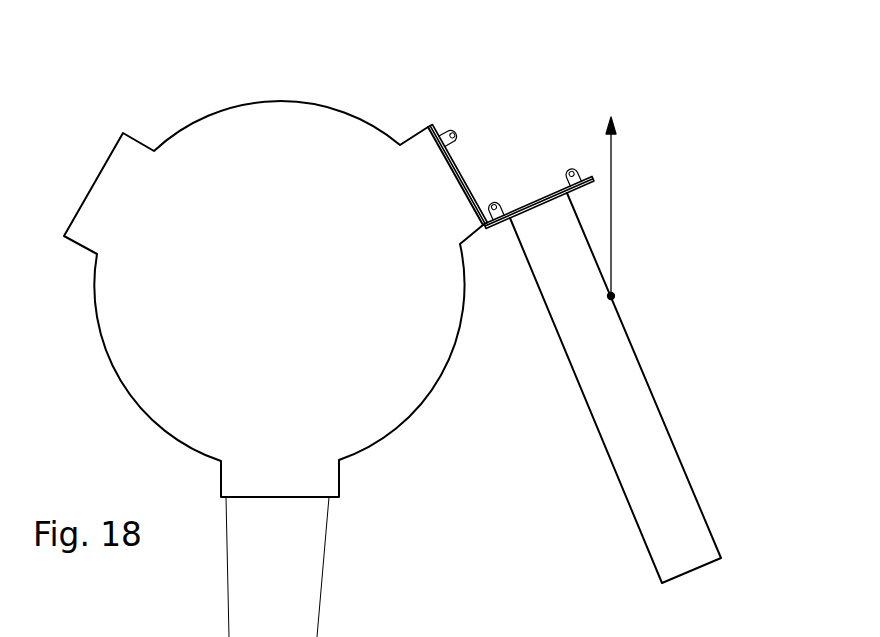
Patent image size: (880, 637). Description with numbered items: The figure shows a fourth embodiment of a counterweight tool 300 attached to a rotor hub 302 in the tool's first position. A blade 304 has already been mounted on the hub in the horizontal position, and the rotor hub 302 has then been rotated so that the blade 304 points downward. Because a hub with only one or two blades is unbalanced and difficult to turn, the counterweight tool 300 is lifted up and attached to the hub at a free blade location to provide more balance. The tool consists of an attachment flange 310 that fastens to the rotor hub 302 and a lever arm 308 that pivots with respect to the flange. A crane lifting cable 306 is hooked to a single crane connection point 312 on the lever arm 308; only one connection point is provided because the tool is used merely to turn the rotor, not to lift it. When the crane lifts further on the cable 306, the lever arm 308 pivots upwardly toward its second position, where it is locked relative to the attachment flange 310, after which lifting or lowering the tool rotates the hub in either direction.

The counterweight tool 300 is at (658, 267).
The rotor hub 302 is at (263, 123).
The blade 304 is at (302, 582).
The crane lifting cable 306 is at (615, 170).
The lever arm 308 is at (647, 425).
The attachment flange 310 is at (462, 165).
The crane connection point 312 is at (615, 297).